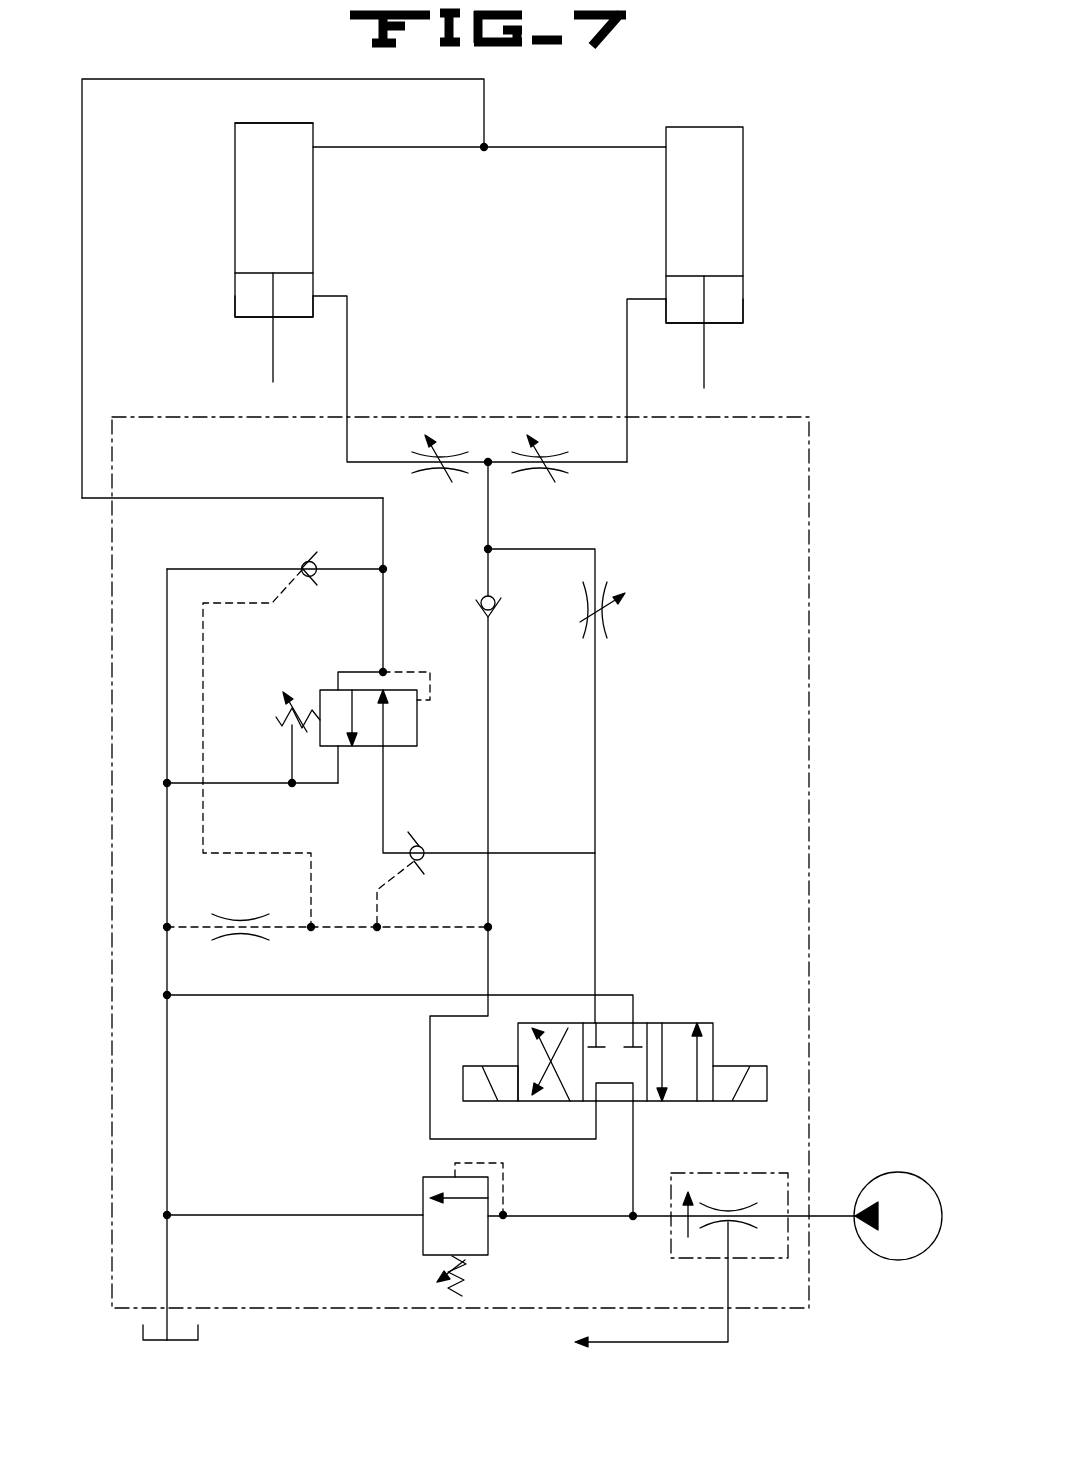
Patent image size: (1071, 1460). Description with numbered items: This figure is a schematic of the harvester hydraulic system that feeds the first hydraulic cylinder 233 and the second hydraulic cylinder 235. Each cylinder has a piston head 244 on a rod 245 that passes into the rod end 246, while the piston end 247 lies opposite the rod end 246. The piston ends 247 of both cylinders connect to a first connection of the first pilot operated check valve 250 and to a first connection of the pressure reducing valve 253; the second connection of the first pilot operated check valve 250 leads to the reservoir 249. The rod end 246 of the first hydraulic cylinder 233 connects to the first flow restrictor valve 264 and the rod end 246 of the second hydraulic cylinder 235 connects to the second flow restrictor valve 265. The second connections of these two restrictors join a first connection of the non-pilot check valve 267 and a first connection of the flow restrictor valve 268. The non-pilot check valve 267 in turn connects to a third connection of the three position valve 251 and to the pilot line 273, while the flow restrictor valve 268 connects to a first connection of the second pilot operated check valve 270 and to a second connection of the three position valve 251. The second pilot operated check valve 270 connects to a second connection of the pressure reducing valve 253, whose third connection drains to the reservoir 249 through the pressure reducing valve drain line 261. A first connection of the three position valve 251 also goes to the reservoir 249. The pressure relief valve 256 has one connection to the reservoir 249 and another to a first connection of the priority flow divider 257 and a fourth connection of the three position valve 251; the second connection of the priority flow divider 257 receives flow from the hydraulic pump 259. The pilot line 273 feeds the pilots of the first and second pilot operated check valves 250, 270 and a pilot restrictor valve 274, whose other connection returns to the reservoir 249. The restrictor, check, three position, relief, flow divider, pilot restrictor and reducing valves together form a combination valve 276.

The first hydraulic cylinder 233 is at (226, 191).
The second hydraulic cylinder 235 is at (755, 193).
The piston head 244 is at (250, 272).
The rod 245 is at (270, 367).
The rod end 246 is at (243, 319).
The piston end 247 is at (270, 124).
The reservoir 249 is at (182, 1342).
The first pilot operated check valve 250 is at (300, 562).
The three position valve 251 is at (690, 1023).
The pressure reducing valve 253 is at (417, 738).
The pressure relief valve 256 is at (423, 1243).
The priority flow divider 257 is at (713, 1260).
The hydraulic pump 259 is at (899, 1262).
The pressure reducing valve drain line 261 is at (318, 786).
The first flow restrictor valve 264 is at (441, 474).
The second flow restrictor valve 265 is at (558, 482).
The non-pilot check valve 267 is at (477, 601).
The flow restrictor valve 268 is at (608, 616).
The second pilot operated check valve 270 is at (443, 826).
The pilot line 273 is at (426, 929).
The pilot restrictor valve 274 is at (252, 938).
The combination valve 276 is at (830, 433).